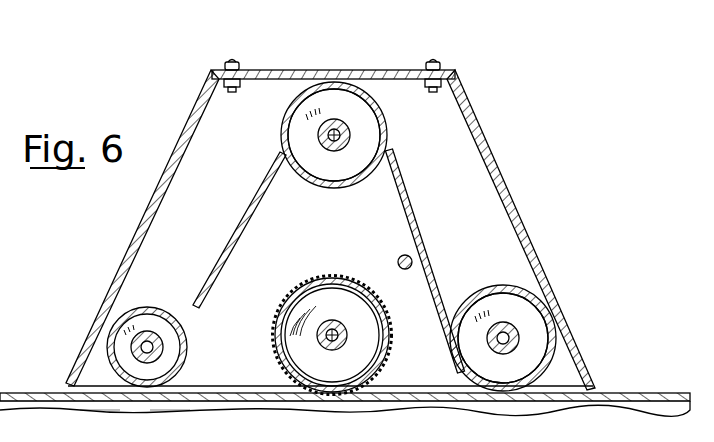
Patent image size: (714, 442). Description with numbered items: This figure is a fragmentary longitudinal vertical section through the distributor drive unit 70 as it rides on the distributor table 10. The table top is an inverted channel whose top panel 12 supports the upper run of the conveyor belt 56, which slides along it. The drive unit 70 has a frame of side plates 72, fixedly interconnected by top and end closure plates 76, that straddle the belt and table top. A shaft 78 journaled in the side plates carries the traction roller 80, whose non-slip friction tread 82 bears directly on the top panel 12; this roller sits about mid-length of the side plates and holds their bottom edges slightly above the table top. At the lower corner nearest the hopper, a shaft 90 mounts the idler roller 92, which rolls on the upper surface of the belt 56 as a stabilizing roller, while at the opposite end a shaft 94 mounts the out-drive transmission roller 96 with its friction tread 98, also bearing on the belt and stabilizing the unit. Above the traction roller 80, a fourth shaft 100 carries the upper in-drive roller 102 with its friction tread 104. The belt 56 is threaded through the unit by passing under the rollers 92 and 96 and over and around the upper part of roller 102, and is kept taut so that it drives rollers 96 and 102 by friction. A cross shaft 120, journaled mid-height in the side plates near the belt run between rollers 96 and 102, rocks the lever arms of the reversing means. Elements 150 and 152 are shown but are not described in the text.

The distributor table 10 is at (553, 420).
The top panel 12 is at (448, 400).
The conveyor belt 56 is at (240, 217).
The distributor drive unit 70 is at (330, 210).
The side plates 72 is at (470, 167).
The top and end closure plates 76 is at (330, 210).
The shaft 78 is at (310, 313).
The traction roller 80 is at (327, 293).
The friction tread 82 is at (303, 283).
The shaft 90 is at (150, 330).
The roller 92 is at (139, 318).
The shaft 94 is at (518, 319).
The drive transmission roller 96 is at (463, 320).
The friction tread 98 is at (513, 290).
The fourth shaft 100 is at (354, 149).
The upper roller 102 is at (313, 166).
The friction tread 104 is at (363, 180).
The cross shaft 120 is at (400, 257).
The support member 150 is at (100, 426).
The support member 152 is at (170, 426).